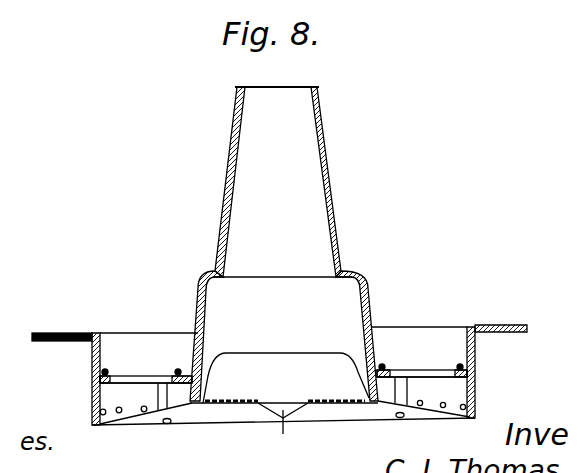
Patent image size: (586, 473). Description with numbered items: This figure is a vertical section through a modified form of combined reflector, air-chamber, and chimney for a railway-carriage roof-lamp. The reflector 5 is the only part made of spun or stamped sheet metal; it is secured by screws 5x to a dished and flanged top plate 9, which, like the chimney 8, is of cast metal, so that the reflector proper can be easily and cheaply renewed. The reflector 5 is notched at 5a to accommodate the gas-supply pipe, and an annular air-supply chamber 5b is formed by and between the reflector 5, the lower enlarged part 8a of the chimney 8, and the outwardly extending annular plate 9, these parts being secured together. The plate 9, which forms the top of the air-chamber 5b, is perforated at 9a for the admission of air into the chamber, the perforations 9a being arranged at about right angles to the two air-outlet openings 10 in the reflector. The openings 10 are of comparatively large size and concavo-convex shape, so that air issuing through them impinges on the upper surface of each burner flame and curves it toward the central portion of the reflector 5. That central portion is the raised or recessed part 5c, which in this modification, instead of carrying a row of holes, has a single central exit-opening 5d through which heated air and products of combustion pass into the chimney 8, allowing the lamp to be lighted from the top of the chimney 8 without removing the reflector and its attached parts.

The reflector 5 is at (478, 392).
The notch 5a is at (62, 342).
The annular air-supply chamber 5b is at (283, 396).
The raised central part 5c is at (243, 378).
The exit-opening 5d is at (322, 377).
The screws 5x is at (170, 424).
The chimney 8 is at (278, 182).
The lower enlarged part of the chimney 8a is at (284, 336).
The top plate 9 is at (102, 387).
The perforations 9a is at (129, 376).
The air-outlet openings 10 is at (283, 430).